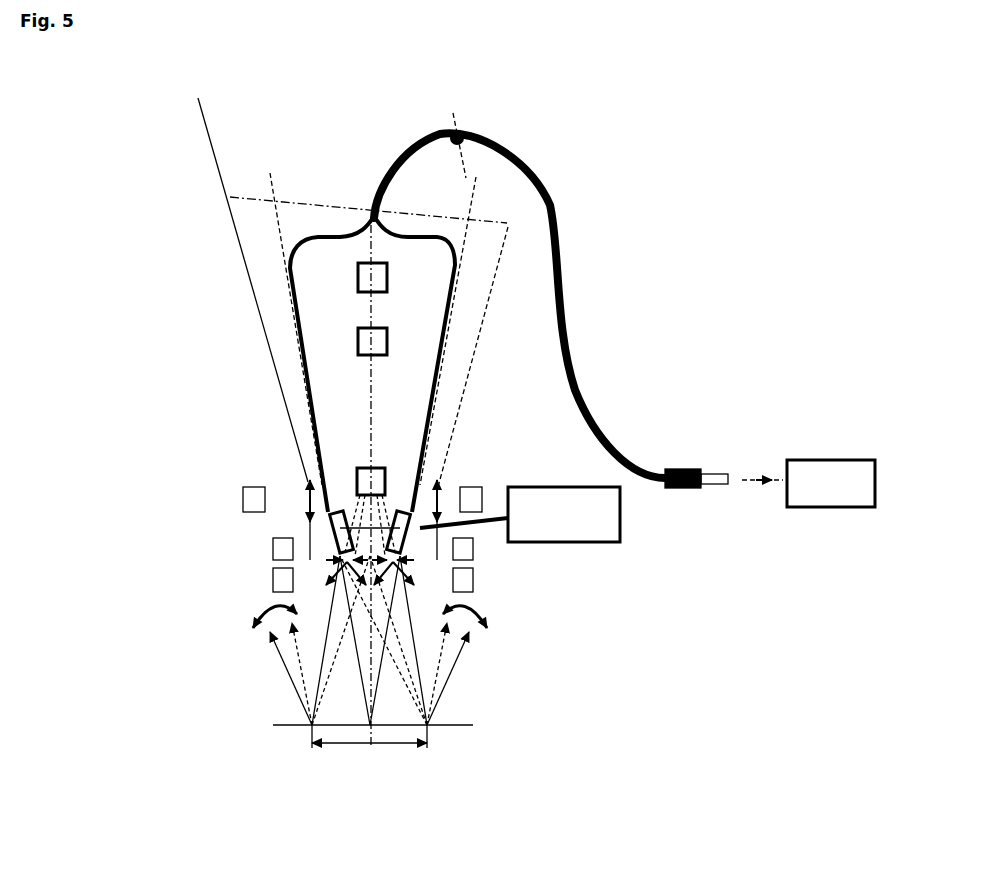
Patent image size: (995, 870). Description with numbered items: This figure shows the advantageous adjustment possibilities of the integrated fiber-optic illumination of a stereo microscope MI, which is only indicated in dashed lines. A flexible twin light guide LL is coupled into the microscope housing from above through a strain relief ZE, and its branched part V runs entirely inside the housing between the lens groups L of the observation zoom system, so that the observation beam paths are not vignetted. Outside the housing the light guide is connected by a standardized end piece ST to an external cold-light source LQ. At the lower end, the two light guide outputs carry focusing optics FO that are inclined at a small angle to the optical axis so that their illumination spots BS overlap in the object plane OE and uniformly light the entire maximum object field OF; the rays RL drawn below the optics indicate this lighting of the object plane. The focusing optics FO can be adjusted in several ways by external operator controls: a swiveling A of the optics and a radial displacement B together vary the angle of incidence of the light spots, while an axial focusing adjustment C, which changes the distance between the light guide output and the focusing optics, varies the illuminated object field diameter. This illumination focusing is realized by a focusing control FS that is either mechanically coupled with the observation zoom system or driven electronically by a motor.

The microscope MI is at (343, 276).
The strain relief ZE is at (460, 137).
The twin light guide LL is at (377, 199).
The branch of the light guide V is at (311, 393).
The lens groups L is at (357, 272).
The illuminated field diameter variation C is at (310, 500).
The focusing optics FO is at (345, 540).
The focusing control FS is at (520, 514).
The standardized end piece ST is at (677, 488).
The radial displacement of illumination focusing optics B is at (333, 559).
The swiveling of illumination focusing optics A is at (330, 577).
The cold-light source LQ is at (838, 488).
The illumination spots BS is at (773, 699).
The object field OF is at (615, 686).
The illumination rays RL is at (468, 630).
The object plane OE is at (318, 746).